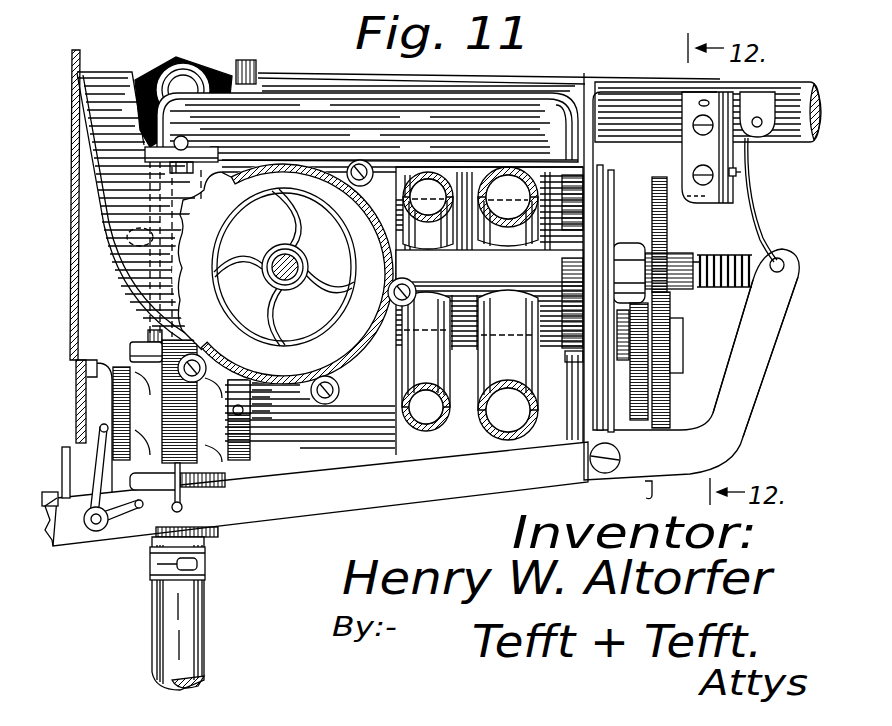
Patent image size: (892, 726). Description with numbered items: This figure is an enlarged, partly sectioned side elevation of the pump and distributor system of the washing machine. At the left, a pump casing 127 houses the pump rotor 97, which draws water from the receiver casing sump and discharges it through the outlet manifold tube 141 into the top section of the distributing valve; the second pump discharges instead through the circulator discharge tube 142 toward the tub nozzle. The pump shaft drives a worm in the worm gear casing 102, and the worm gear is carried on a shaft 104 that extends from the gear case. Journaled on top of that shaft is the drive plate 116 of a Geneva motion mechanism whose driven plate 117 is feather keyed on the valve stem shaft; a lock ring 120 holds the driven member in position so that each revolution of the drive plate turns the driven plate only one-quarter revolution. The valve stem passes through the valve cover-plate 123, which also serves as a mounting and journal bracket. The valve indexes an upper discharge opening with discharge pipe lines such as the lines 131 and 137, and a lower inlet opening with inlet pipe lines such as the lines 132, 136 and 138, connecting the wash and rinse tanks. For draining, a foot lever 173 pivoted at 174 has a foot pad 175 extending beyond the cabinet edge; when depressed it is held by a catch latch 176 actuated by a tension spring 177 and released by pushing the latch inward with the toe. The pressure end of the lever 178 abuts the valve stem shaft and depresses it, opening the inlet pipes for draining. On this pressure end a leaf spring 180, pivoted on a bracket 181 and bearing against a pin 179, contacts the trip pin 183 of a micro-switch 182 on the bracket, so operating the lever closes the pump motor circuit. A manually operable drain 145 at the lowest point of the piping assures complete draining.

The pump rotor 97 is at (320, 322).
The worm gear casing 102 is at (331, 414).
The shaft 104 is at (467, 347).
The drive plate 116 is at (649, 484).
The driven plate 117 is at (656, 182).
The lock ring 120 is at (664, 412).
The valve cover-plate 123 is at (630, 242).
The pump casing 127 is at (347, 366).
The discharge pipe line opening 131 is at (533, 416).
The inlet pipe line 132 is at (408, 424).
The inlet pipe line 136 is at (450, 173).
The discharge pipe line opening 137 is at (498, 240).
The inlet pipe line 138 is at (425, 240).
The outlet manifold tube 141 is at (463, 110).
The circulator discharge tube 142 is at (187, 72).
The manually operable drain 145 is at (253, 455).
The foot lever 173 is at (408, 496).
The pivot 174 is at (620, 458).
The foot pad 175 is at (46, 512).
The catch latch 176 is at (62, 452).
The tension spring 177 is at (125, 522).
The pressure end of the lever 178 is at (750, 284).
The pin 179 is at (766, 277).
The leaf spring 180 is at (752, 216).
The bracket 181 is at (757, 103).
The micro-switch 182 is at (708, 200).
The trip pin 183 is at (741, 171).